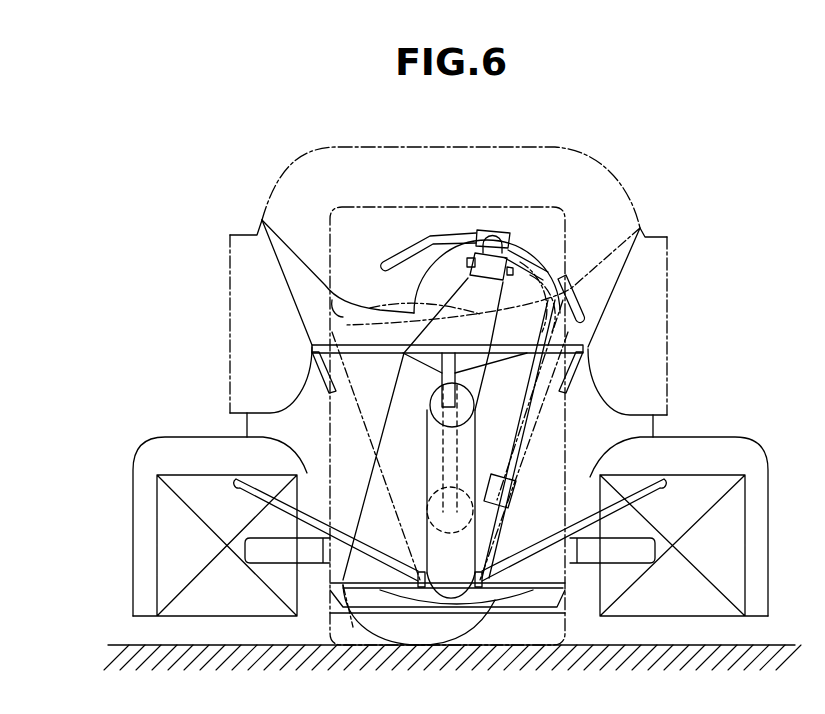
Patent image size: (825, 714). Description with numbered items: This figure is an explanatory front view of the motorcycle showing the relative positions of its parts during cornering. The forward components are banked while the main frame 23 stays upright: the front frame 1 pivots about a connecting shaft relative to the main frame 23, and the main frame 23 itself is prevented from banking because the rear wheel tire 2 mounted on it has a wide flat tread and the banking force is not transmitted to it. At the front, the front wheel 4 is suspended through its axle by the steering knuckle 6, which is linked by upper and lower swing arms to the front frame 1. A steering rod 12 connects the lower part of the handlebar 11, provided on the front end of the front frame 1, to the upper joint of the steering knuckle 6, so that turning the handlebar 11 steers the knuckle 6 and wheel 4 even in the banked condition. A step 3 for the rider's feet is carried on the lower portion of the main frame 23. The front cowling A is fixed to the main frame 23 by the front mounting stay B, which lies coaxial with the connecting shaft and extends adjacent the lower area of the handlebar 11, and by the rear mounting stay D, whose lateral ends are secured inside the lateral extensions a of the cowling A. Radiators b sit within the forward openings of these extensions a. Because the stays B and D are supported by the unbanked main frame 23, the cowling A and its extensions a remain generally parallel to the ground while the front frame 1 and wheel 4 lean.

The front frame 1 is at (430, 468).
The rear wheel tire 2 is at (441, 147).
The step 3 is at (282, 560).
The front wheel 4 is at (437, 628).
The steering knuckle 6 is at (570, 333).
The handlebar 11 is at (580, 300).
The steering rod 12 is at (466, 262).
The main frame 23 is at (517, 613).
The lateral extensions of the front cowling a is at (130, 512).
The radiators b is at (240, 603).
The front cowling A is at (343, 300).
The front mounting stay B is at (575, 385).
The rear mounting stay D is at (568, 540).